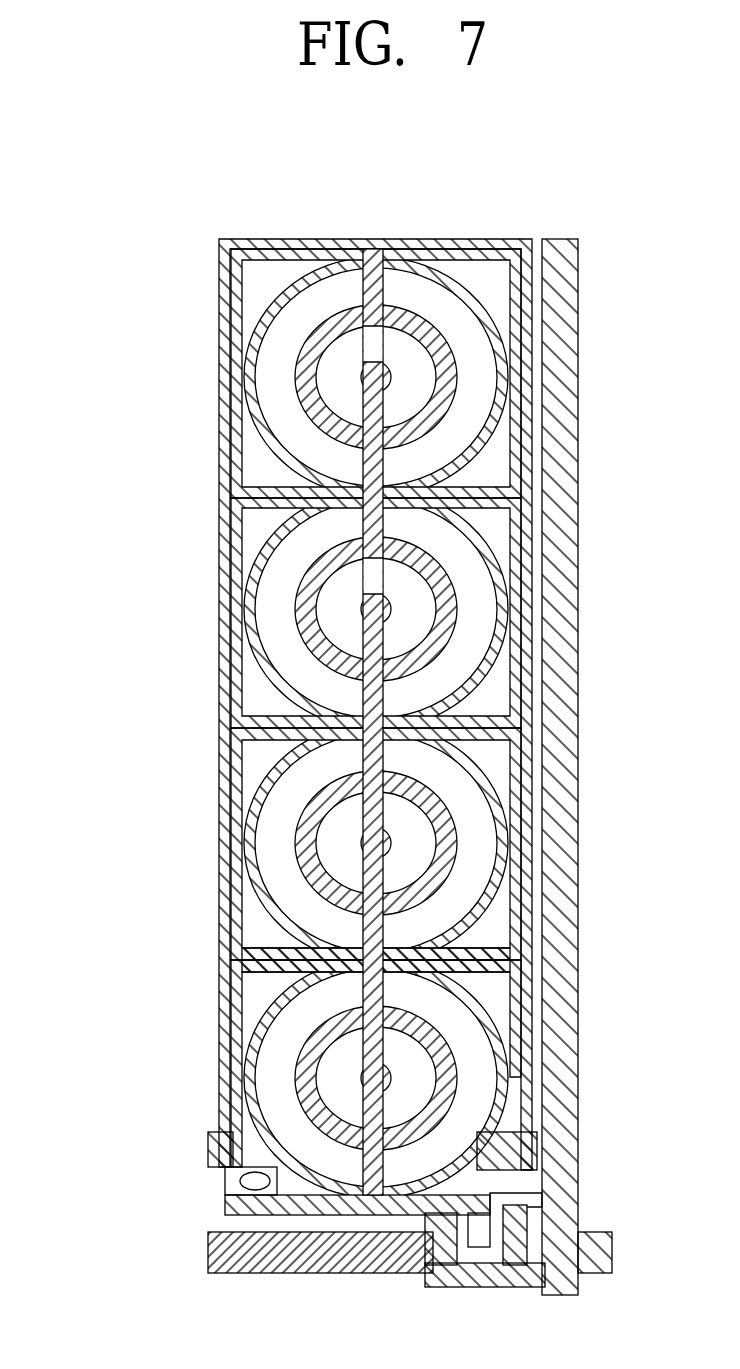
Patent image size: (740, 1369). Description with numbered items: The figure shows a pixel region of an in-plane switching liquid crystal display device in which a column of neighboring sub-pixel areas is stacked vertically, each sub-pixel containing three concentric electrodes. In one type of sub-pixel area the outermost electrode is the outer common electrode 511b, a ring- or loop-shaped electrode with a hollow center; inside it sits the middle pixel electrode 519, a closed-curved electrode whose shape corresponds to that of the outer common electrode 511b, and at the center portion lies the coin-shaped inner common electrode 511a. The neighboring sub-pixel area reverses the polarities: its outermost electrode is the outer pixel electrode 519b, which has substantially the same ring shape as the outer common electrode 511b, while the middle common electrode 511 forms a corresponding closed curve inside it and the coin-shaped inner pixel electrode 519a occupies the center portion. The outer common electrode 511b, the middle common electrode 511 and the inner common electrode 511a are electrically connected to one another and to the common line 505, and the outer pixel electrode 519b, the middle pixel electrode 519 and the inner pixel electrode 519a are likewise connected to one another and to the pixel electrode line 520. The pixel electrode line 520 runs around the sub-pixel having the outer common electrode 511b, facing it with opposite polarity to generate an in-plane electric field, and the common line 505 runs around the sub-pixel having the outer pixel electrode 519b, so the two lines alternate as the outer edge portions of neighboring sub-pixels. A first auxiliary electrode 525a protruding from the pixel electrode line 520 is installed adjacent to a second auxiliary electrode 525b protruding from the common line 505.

The common line 505 is at (237, 1017).
The middle common electrode 511 is at (323, 561).
The inner common electrode 511a is at (358, 381).
The outer common electrode 511b is at (243, 432).
The middle pixel electrode 519 is at (333, 327).
The inner pixel electrode 519a is at (355, 610).
The outer pixel electrode 519b is at (247, 668).
The pixel electrode line 520 is at (233, 820).
The first auxiliary electrode 525a is at (300, 961).
The second auxiliary electrode 525b is at (243, 967).